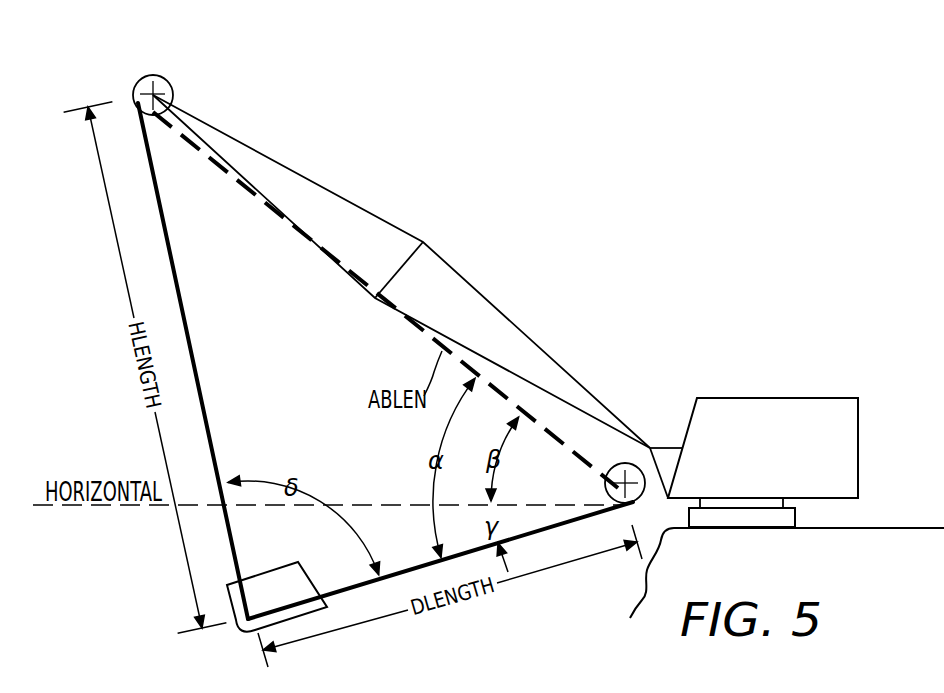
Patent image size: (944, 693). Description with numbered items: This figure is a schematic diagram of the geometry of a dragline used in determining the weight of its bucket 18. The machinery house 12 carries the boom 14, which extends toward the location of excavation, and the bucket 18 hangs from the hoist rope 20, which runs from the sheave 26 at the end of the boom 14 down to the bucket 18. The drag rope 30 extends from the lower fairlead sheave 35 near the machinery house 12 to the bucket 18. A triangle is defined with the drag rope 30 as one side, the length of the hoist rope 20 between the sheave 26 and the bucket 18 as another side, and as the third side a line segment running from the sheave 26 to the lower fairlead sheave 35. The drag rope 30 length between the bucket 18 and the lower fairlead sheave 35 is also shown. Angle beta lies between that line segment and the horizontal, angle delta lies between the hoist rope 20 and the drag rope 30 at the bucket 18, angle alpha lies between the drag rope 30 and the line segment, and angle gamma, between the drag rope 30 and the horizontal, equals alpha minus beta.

The machinery house 12 is at (786, 398).
The boom 14 is at (357, 206).
The bucket 18 is at (268, 571).
The hoist rope 20 is at (176, 283).
The sheave 26 is at (172, 81).
The drag rope 30 is at (400, 571).
The lower fairlead sheave 35 is at (613, 466).